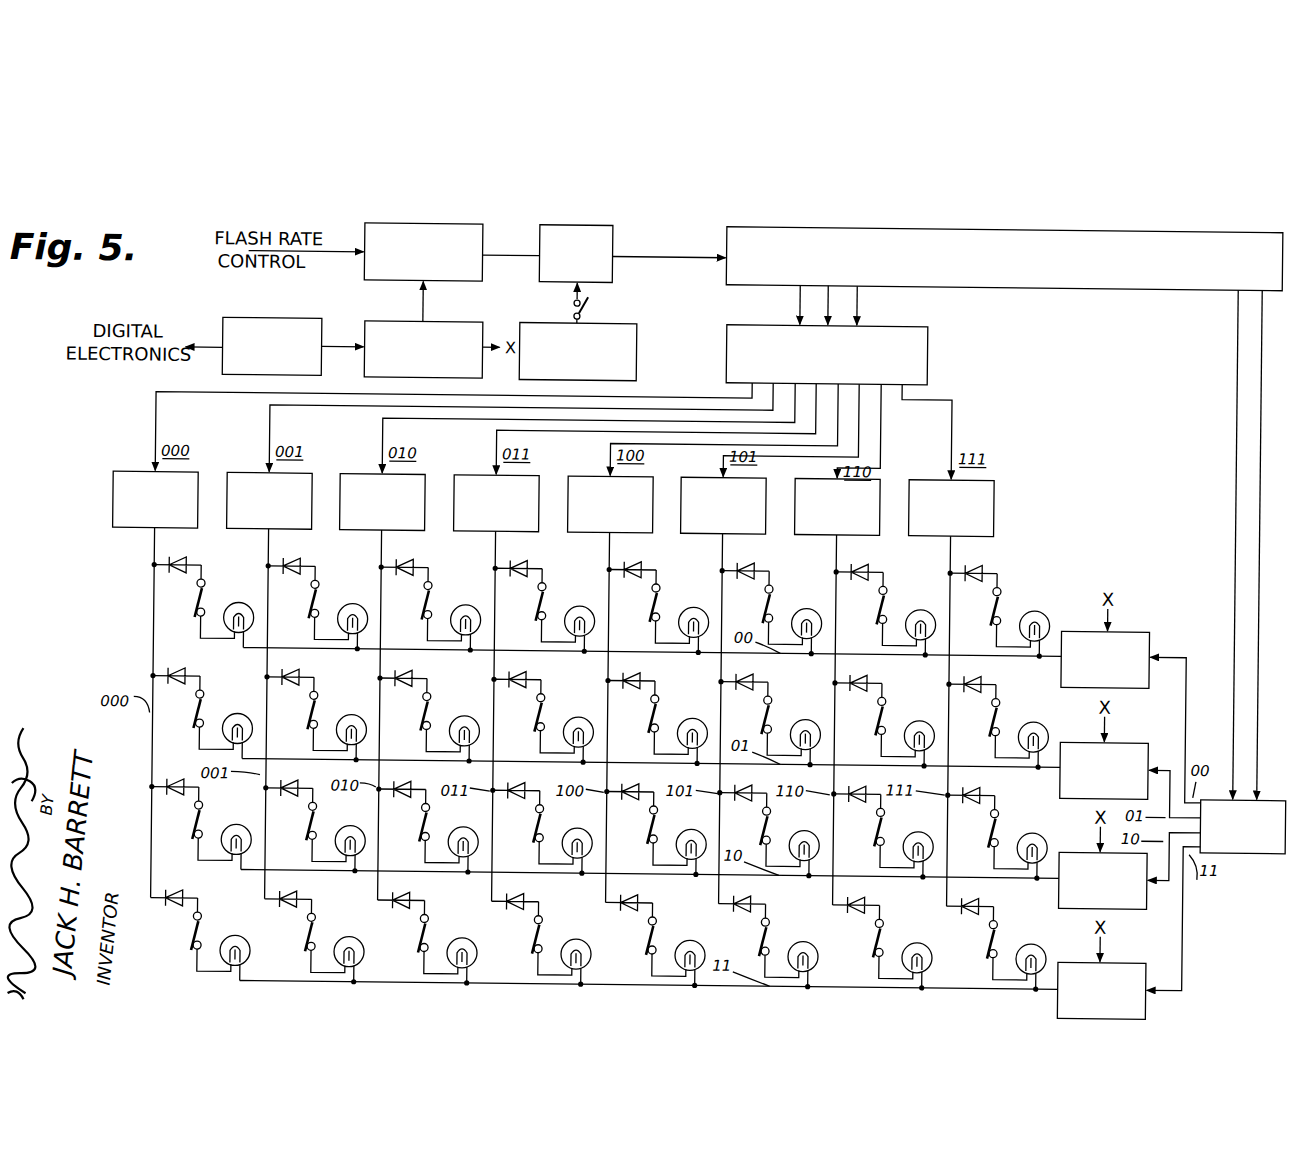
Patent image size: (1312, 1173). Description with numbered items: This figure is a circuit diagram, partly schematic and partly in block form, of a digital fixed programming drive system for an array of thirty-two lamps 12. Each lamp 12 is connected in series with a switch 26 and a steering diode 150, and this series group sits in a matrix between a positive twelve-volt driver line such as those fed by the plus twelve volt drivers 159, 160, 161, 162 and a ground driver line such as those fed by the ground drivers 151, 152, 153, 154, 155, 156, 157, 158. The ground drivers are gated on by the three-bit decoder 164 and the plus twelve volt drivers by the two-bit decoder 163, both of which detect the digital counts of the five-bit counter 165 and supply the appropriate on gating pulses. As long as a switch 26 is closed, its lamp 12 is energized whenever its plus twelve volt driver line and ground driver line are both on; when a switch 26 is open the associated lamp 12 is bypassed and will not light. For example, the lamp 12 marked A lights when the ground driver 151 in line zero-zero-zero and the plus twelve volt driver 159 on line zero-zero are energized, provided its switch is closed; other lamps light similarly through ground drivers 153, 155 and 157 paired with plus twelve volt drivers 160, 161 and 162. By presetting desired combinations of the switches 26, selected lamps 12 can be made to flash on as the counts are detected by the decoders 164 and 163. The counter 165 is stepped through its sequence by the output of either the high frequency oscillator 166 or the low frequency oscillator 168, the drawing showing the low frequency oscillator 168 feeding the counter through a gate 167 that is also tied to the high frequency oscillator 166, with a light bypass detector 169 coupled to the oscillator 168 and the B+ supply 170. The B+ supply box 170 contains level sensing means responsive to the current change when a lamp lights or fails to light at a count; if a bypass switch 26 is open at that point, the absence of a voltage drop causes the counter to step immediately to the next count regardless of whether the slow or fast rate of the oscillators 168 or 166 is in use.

The lamp 12 is at (249, 580).
The switch 26 is at (197, 603).
The steering diode 150 is at (183, 569).
The ground driver 151 is at (128, 476).
The ground driver 152 is at (242, 476).
The ground driver 153 is at (355, 476).
The ground driver 154 is at (469, 476).
The ground driver 155 is at (583, 476).
The ground driver 156 is at (696, 476).
The ground driver 157 is at (810, 476).
The ground driver 158 is at (924, 476).
The +12 volt driver 159 is at (1150, 627).
The +12 volt driver 160 is at (1146, 738).
The +12 volt driver 161 is at (1068, 848).
The +12 volt driver 162 is at (1122, 958).
The 2-bit decoder 163 is at (1240, 847).
The 3-bit decoder 164 is at (925, 351).
The 5-bit counter 165 is at (843, 226).
The high frequency oscillator 166 is at (604, 325).
The gate 167 is at (597, 227).
The low frequency oscillator 168 is at (457, 226).
The light bypass detector 169 is at (455, 326).
The B+ supply box 170 is at (280, 321).
The lamp A is at (224, 626).